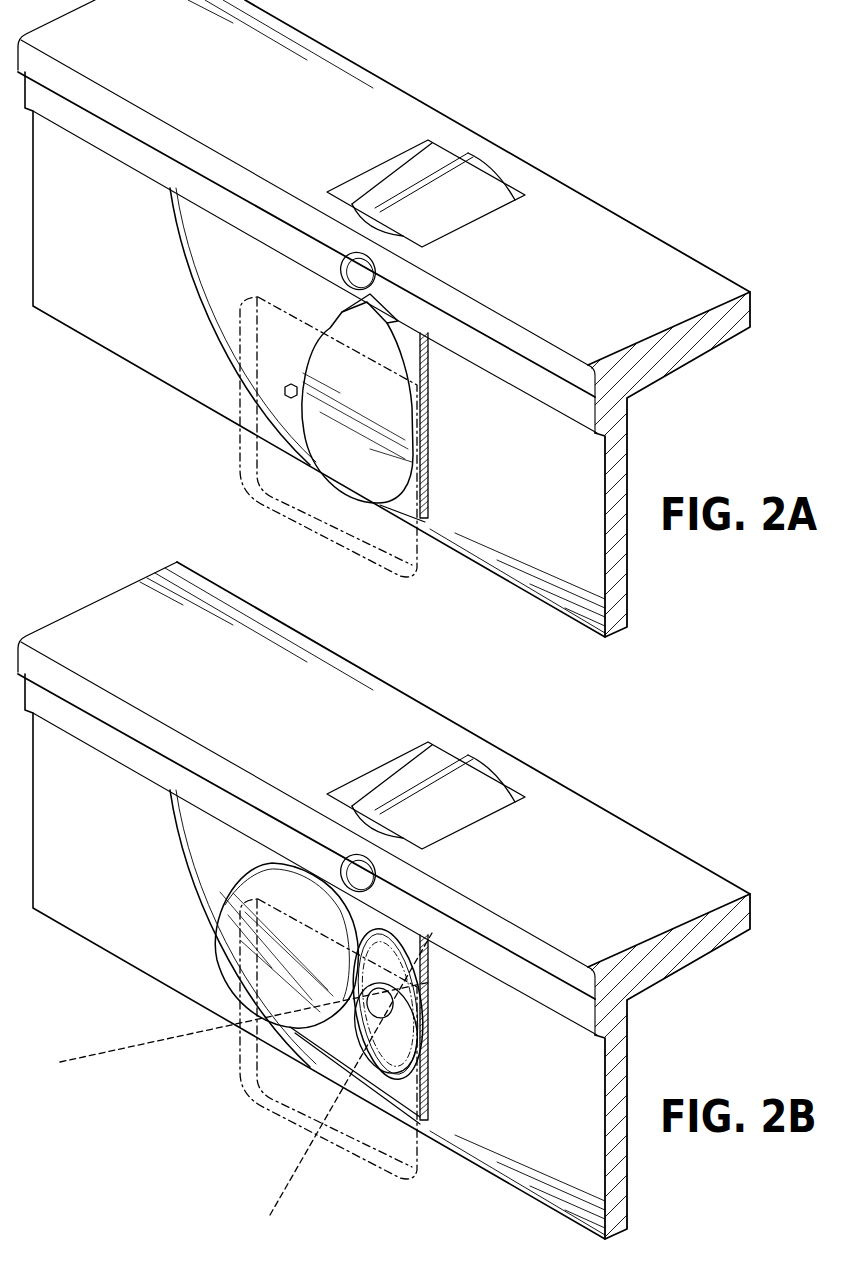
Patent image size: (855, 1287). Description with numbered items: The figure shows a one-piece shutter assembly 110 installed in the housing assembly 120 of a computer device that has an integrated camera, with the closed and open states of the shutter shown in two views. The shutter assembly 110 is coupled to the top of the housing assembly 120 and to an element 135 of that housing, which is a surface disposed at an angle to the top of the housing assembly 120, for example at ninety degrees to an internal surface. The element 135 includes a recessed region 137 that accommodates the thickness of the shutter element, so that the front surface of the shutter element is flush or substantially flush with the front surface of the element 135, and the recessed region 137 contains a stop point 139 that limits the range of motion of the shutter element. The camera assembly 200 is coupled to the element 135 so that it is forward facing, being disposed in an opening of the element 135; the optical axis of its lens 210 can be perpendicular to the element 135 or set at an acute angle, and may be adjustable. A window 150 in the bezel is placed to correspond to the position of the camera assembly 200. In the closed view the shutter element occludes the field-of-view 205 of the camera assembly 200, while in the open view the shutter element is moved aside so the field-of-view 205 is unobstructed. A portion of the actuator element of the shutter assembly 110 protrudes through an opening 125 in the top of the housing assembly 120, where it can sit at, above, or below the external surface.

In FIG. 2A, the shutter assembly 110 is at (481, 152).
In FIG. 2B, the shutter assembly 110 is at (481, 754).
In FIG. 2A, the housing assembly 120 is at (620, 232).
In FIG. 2B, the housing assembly 120 is at (620, 834).
In FIG. 2A, the opening 125 is at (388, 170).
In FIG. 2B, the opening 125 is at (388, 772).
In FIG. 2A, the element 135 is at (113, 335).
In FIG. 2B, the element 135 is at (113, 937).
In FIG. 2A, the recessed region 137 is at (207, 292).
In FIG. 2B, the recessed region 137 is at (207, 885).
In FIG. 2A, the stop point 139 is at (292, 385).
In FIG. 2A, the window 150 is at (282, 510).
In FIG. 2B, the window 150 is at (282, 1112).
In FIG. 2B, the camera assembly 200 is at (414, 965).
In FIG. 2B, the field-of-view 205 is at (285, 1190).
In FIG. 2B, the lens 210 is at (405, 1025).